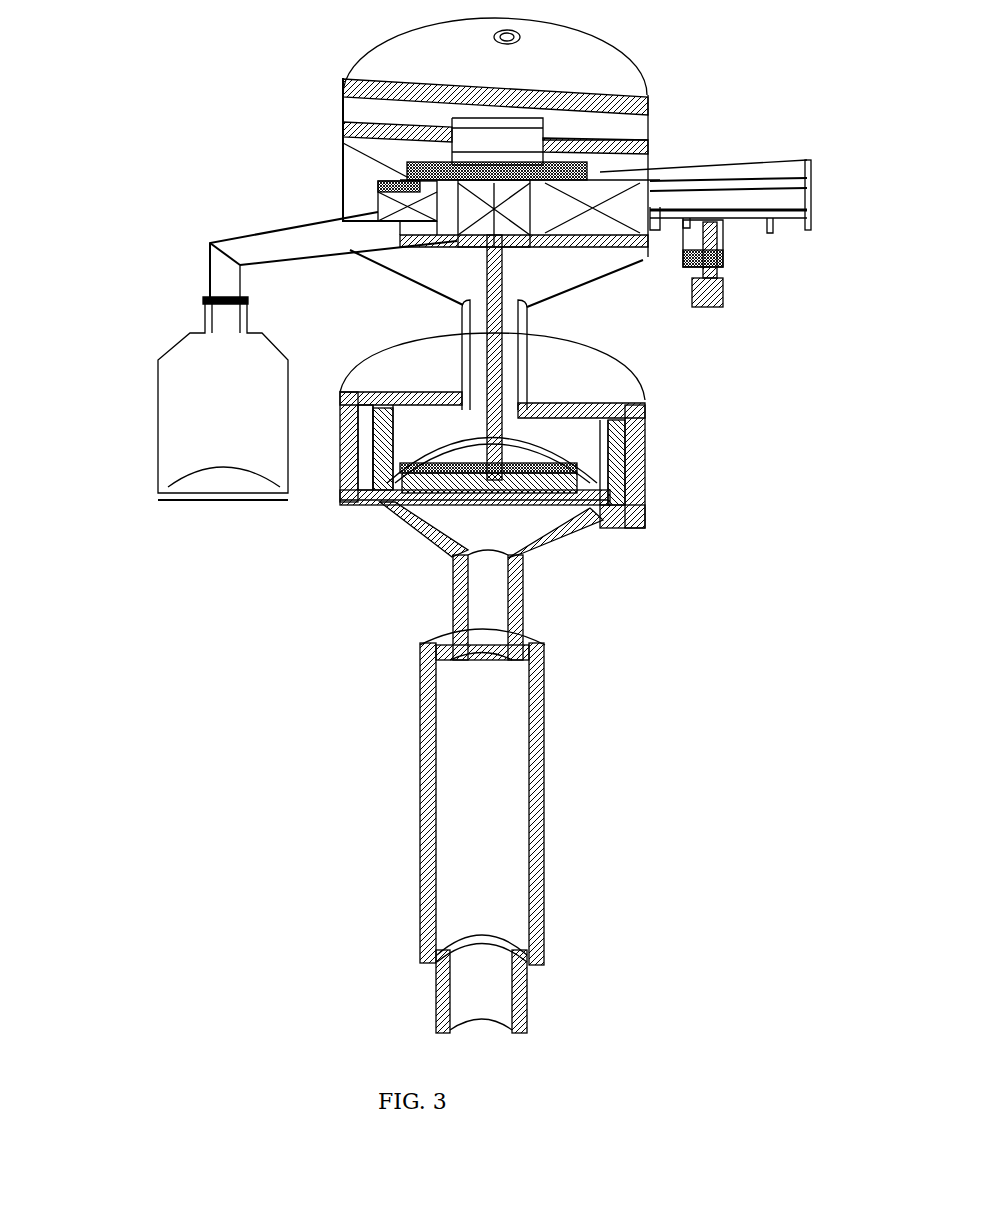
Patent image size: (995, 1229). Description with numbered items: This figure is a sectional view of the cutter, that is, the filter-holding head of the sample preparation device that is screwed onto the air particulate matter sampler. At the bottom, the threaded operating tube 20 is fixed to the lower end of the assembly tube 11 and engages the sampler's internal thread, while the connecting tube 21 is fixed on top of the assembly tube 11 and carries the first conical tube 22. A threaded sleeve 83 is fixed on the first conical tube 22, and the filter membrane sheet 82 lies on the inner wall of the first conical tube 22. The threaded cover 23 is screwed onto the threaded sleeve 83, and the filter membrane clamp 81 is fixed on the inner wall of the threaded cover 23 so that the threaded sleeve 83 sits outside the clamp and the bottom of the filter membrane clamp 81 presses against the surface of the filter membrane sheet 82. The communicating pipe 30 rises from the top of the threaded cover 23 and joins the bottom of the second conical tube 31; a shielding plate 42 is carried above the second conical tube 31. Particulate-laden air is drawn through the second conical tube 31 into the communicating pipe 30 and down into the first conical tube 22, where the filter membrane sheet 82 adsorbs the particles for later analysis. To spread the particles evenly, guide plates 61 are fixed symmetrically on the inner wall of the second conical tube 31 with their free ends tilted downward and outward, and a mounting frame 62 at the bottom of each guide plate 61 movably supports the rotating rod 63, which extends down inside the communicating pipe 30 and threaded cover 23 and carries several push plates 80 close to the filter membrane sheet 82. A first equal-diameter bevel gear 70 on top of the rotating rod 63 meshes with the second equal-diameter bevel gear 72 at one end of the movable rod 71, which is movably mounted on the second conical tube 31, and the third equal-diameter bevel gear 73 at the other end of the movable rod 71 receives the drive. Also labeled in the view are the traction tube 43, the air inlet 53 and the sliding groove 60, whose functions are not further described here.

The assembly tube 11 is at (455, 878).
The threaded operating tube 20 is at (437, 985).
The connecting tube 21 is at (520, 612).
The first conical tube 22 is at (608, 521).
The threaded cover 23 is at (645, 440).
The communicating pipe 30 is at (525, 371).
The second conical tube 31 is at (632, 130).
The shielding plate 42 is at (410, 50).
The traction tube 43 is at (260, 230).
The air inlet 53 is at (415, 128).
The sliding groove 60 is at (430, 165).
The guide plate 61 is at (400, 178).
The mounting frame 62 is at (395, 205).
The rotating rod 63 is at (465, 336).
The first equal-diameter bevel gear 70 is at (455, 215).
The movable rod 71 is at (660, 179).
The second equal-diameter bevel gear 72 is at (600, 172).
The third equal-diameter bevel gear 73 is at (727, 250).
The push plate 80 is at (362, 460).
The filter membrane clamp 81 is at (380, 423).
The filter membrane sheet 82 is at (345, 494).
The threaded sleeve 83 is at (645, 478).